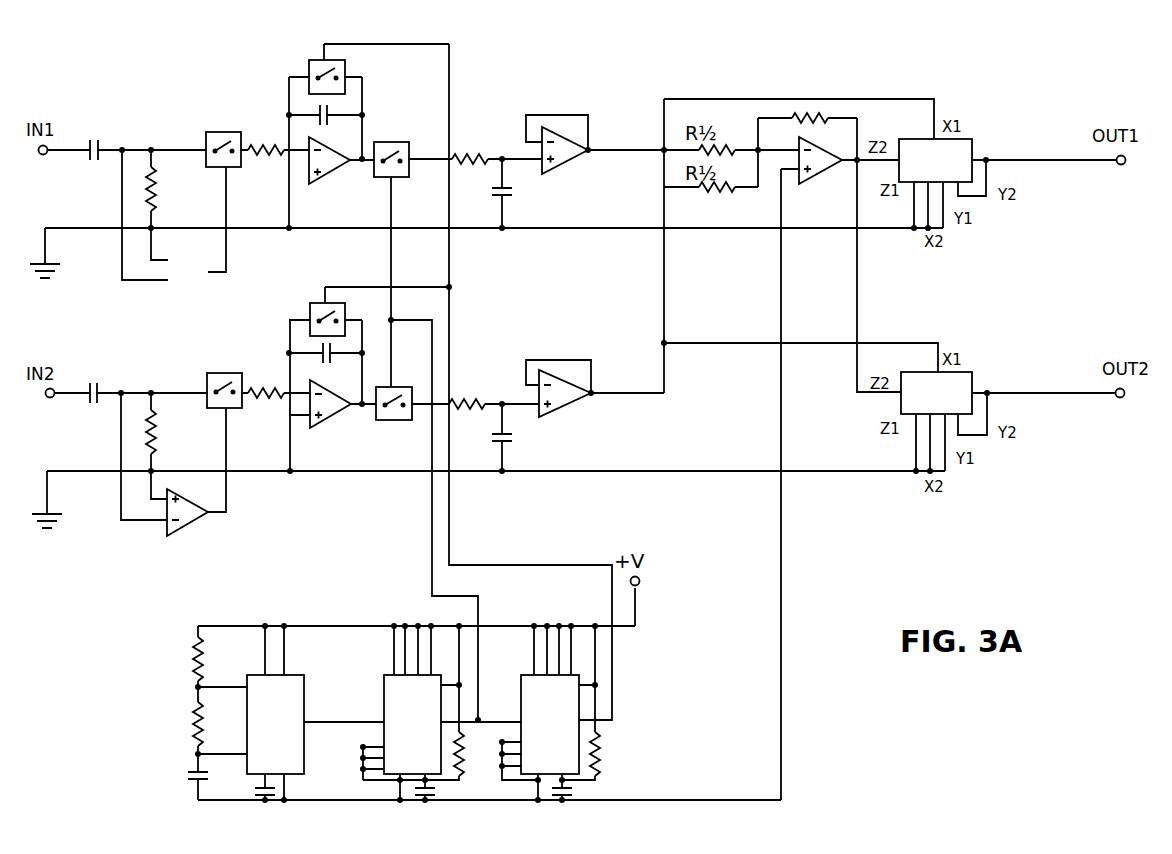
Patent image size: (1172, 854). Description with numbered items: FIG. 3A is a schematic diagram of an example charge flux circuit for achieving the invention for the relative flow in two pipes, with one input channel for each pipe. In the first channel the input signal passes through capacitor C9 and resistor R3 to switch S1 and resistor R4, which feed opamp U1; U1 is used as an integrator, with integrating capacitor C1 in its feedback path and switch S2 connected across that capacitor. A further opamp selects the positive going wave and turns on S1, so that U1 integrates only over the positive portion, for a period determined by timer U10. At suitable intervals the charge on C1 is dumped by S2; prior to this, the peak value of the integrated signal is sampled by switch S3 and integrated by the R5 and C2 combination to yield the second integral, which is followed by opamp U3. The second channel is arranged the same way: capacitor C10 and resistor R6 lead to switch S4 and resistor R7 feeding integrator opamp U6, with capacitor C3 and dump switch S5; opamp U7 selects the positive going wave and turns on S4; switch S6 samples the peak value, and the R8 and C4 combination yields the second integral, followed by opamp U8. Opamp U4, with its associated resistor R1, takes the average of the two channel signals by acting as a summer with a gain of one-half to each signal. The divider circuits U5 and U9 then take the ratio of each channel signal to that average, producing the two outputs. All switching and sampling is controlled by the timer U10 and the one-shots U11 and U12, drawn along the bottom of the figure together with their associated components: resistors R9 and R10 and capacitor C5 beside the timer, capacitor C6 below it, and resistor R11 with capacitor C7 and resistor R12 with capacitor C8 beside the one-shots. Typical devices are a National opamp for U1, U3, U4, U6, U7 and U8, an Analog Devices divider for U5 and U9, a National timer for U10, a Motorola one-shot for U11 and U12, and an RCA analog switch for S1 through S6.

The input coupling capacitor C9 is at (92, 138).
The input resistor R3 is at (165, 189).
The switch S1 is at (223, 136).
The resistor R4 is at (266, 137).
The switch S2 is at (344, 68).
The capacitor C1 is at (337, 127).
The opamp U1 is at (329, 169).
The switch S3 is at (391, 146).
The resistor R5 is at (470, 143).
The capacitor C2 is at (518, 196).
The opamp U3 is at (565, 157).
The feedback resistor R1 is at (814, 131).
The opamp U4 is at (820, 169).
The divider circuit U5 is at (935, 160).
The divider circuit U9 is at (936, 393).
The input coupling capacitor C10 is at (80, 407).
The input resistor R6 is at (166, 432).
The switch S4 is at (224, 376).
The resistor R7 is at (266, 409).
The opamp U7 is at (194, 522).
The switch S5 is at (313, 305).
The capacitor C3 is at (337, 364).
The opamp U6 is at (328, 418).
The switch S6 is at (393, 420).
The resistor R8 is at (467, 390).
The capacitor C4 is at (518, 451).
The opamp U8 is at (565, 406).
The timing resistor R9 is at (173, 659).
The timing resistor R10 is at (173, 720).
The timing capacitor C5 is at (169, 767).
The capacitor C6 is at (246, 793).
The one-shot timing capacitor C7 is at (441, 792).
The one-shot timing capacitor C8 is at (582, 792).
The one-shot timing resistor R11 is at (478, 754).
The one-shot timing resistor R12 is at (618, 754).
The timer U10 is at (275, 724).
The one-shot U11 is at (412, 724).
The one-shot U12 is at (550, 724).